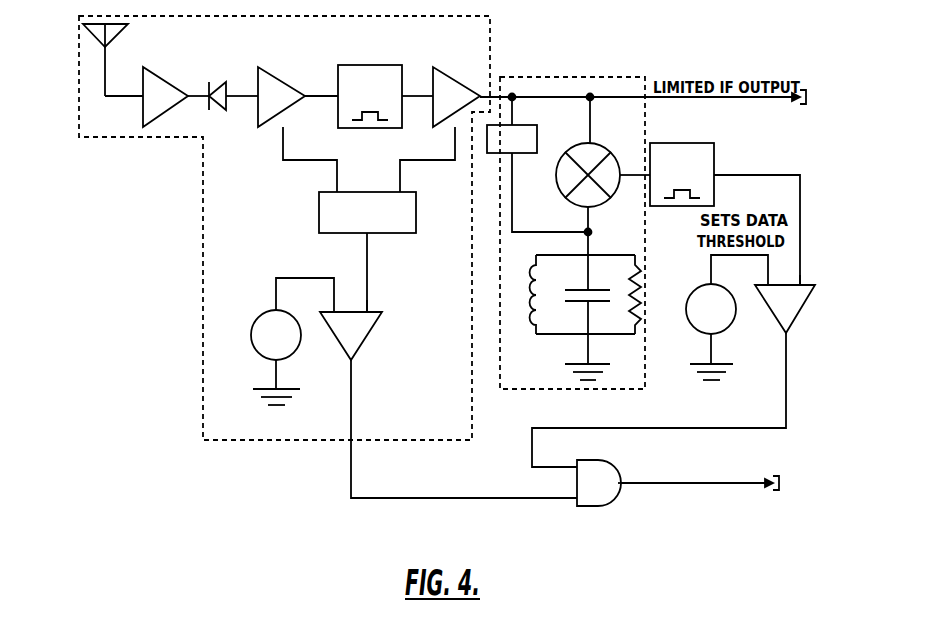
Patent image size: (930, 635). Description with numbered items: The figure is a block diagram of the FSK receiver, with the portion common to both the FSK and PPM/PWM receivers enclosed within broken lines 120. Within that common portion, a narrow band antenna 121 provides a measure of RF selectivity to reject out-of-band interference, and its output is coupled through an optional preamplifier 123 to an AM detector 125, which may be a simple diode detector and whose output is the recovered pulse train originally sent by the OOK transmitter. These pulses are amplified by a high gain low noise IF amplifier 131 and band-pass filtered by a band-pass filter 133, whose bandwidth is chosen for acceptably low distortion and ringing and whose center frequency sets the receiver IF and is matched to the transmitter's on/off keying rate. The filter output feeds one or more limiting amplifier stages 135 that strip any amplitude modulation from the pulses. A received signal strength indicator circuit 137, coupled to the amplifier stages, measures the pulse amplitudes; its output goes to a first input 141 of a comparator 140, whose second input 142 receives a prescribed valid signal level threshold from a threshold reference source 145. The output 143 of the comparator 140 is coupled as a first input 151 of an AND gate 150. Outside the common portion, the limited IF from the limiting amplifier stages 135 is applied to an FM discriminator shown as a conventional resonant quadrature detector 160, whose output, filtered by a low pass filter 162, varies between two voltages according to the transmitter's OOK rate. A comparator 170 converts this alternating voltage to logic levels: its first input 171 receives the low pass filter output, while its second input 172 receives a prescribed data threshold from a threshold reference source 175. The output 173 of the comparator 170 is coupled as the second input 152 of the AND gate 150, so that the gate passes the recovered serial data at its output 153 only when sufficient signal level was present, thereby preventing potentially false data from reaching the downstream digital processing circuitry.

The broken lines 120 is at (490, 70).
The narrow band antenna 121 is at (118, 32).
The preamplifier 123 is at (160, 113).
The AM detector 125 is at (218, 80).
The IF amplifier 131 is at (270, 72).
The band-pass filter 133 is at (398, 65).
The limiting amplifier stages 135 is at (445, 74).
The received signal strength indicator circuit 137 is at (416, 220).
The comparator 140 is at (364, 343).
The first input 141 is at (370, 310).
The second input 142 is at (334, 310).
The output 143 is at (347, 362).
The threshold reference source 145 is at (252, 335).
The AND gate 150 is at (598, 506).
The first input 151 is at (575, 503).
The second input 152 is at (575, 466).
The output 153 is at (620, 478).
The resonant quadrature detector 160 is at (592, 77).
The low pass filter 162 is at (714, 165).
The comparator 170 is at (770, 318).
The first input 171 is at (800, 283).
The second input 172 is at (768, 284).
The output 173 is at (790, 330).
The threshold reference source 175 is at (690, 322).